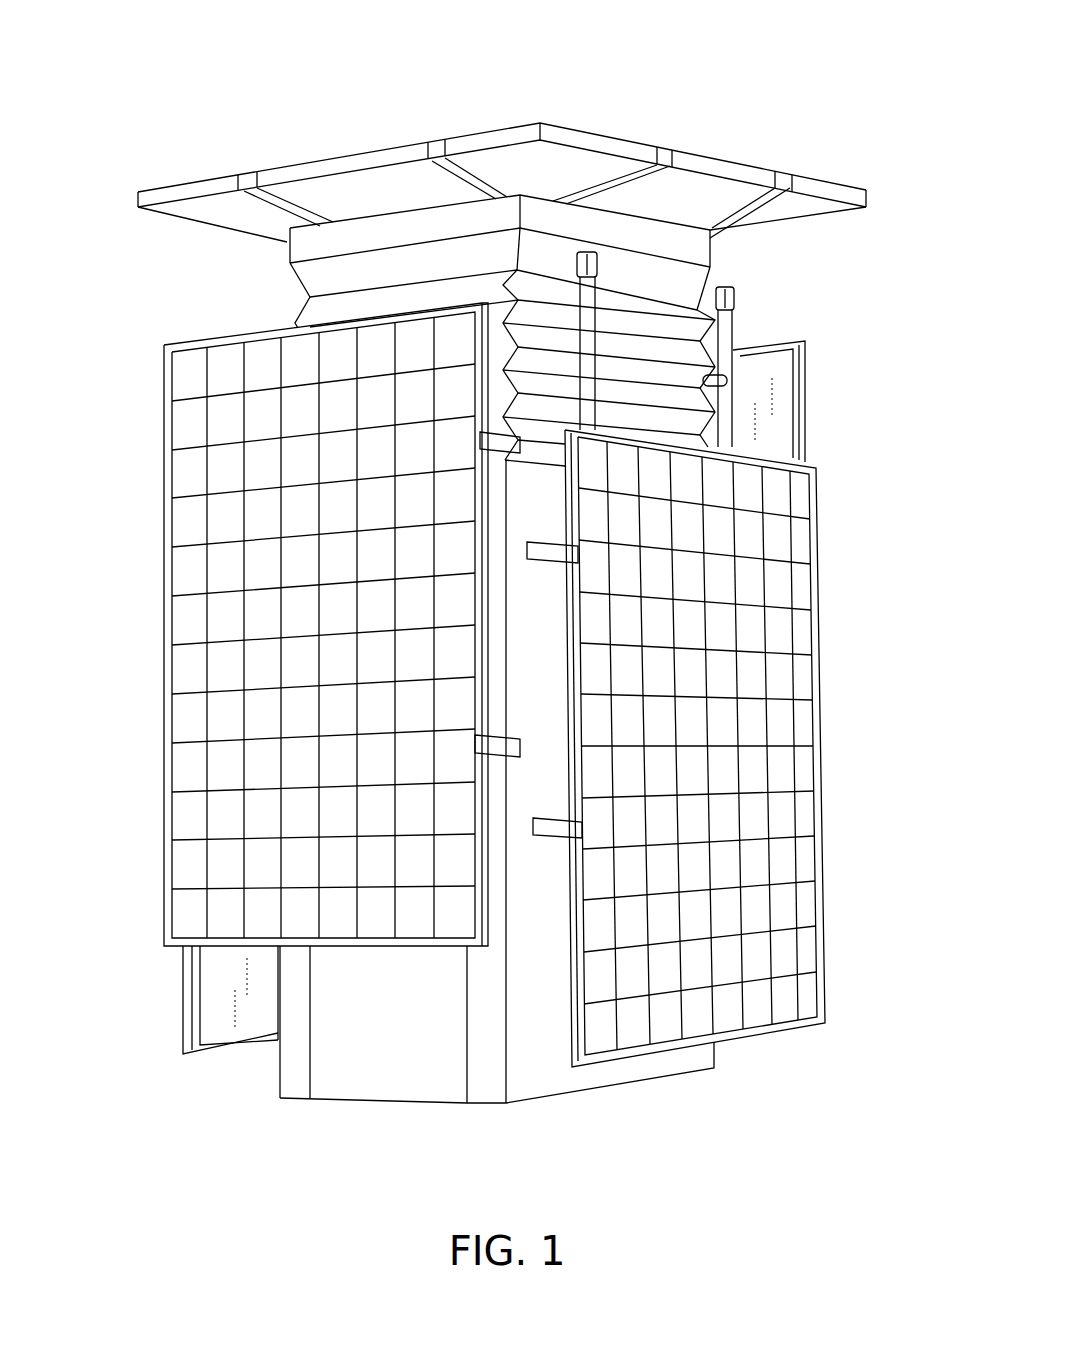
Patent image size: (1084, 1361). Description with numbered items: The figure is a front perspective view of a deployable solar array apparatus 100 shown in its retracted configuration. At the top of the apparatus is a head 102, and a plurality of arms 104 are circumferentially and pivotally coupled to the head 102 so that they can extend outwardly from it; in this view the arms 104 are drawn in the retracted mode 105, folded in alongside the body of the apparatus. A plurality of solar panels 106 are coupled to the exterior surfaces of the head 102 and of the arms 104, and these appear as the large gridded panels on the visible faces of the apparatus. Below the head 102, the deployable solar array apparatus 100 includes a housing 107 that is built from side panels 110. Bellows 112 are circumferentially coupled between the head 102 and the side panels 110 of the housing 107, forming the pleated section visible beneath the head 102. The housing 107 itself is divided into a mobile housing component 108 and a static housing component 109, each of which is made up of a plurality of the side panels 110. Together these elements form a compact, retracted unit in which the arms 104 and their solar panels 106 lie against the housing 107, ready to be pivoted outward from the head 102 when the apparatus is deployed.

The deployable solar array apparatus 100 is at (378, 86).
The head 102 is at (770, 134).
The arms 104 is at (735, 324).
The retracted mode 105 is at (108, 488).
The solar panels 106 is at (778, 720).
The housing 107 is at (118, 1023).
The mobile housing component 108 is at (842, 493).
The static housing component 109 is at (357, 1044).
The side panels 110 is at (505, 1104).
The bellows 112 is at (687, 317).